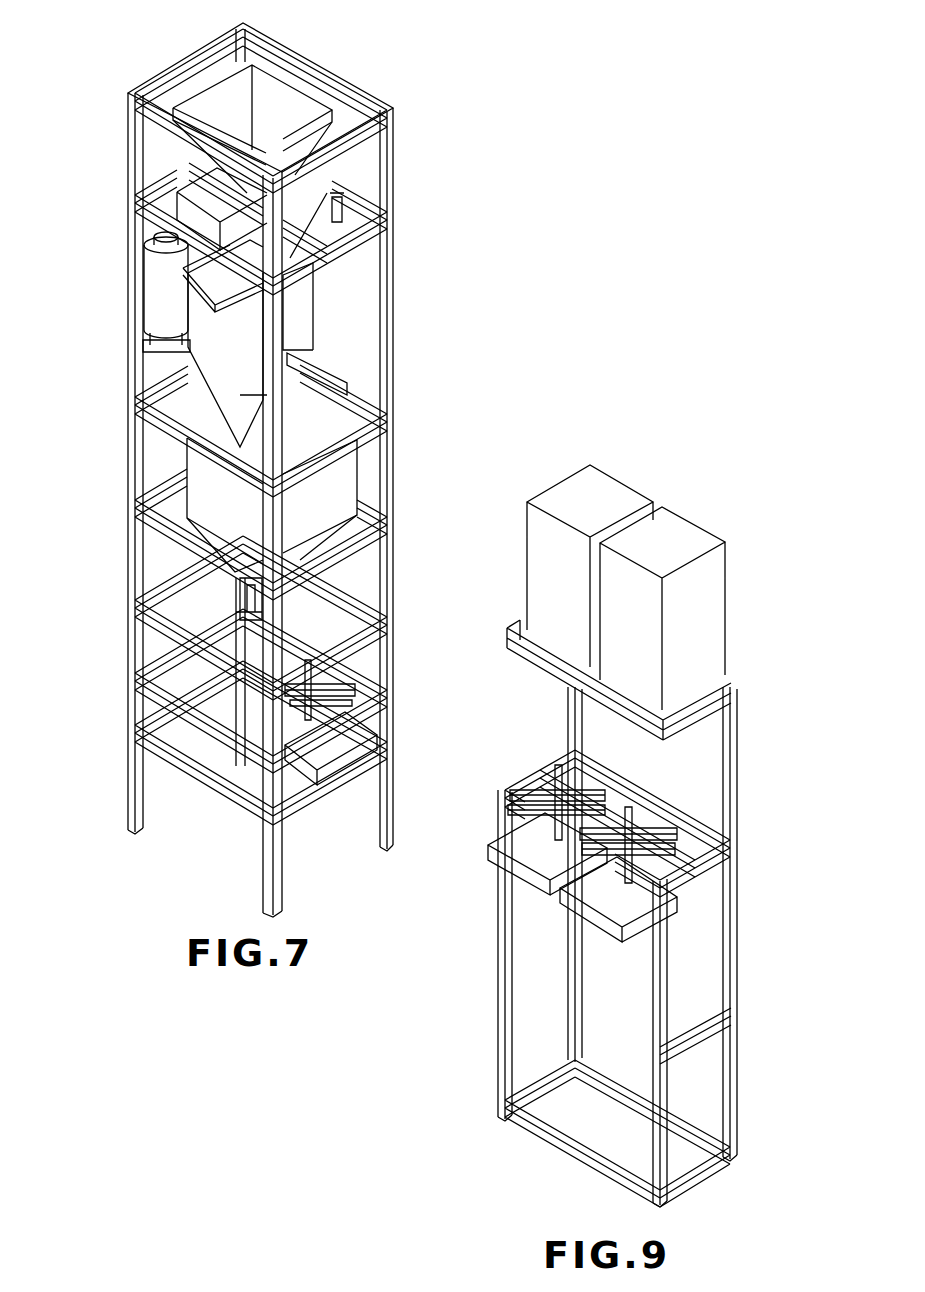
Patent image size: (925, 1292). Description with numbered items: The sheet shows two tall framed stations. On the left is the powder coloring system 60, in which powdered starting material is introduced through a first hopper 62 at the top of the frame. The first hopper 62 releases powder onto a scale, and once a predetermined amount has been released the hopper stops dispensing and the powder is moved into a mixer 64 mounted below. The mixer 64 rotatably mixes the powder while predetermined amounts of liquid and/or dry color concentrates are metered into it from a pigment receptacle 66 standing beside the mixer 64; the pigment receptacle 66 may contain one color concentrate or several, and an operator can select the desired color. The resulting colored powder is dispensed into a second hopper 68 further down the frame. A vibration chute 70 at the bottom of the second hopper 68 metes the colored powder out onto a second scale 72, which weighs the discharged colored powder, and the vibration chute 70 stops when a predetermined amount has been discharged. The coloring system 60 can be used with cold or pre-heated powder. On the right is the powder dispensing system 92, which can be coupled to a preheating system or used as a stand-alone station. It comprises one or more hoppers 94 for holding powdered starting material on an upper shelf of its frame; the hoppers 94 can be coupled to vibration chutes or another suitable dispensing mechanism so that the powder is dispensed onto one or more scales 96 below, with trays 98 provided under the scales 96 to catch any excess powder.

In FIG. 7, the powder coloring system 60 is at (424, 192).
In FIG. 7, the first hopper 62 is at (198, 100).
In FIG. 7, the mixer 64 is at (300, 345).
In FIG. 7, the pigment receptacle 66 is at (158, 290).
In FIG. 7, the second hopper 68 is at (205, 487).
In FIG. 7, the vibration chute 70 is at (292, 602).
In FIG. 7, the second scale 72 is at (300, 690).
In FIG. 9, the powder dispensing system 92 is at (752, 600).
In FIG. 9, the hoppers 94 is at (617, 483).
In FIG. 9, the scales 96 is at (515, 822).
In FIG. 9, the trays 98 is at (600, 925).